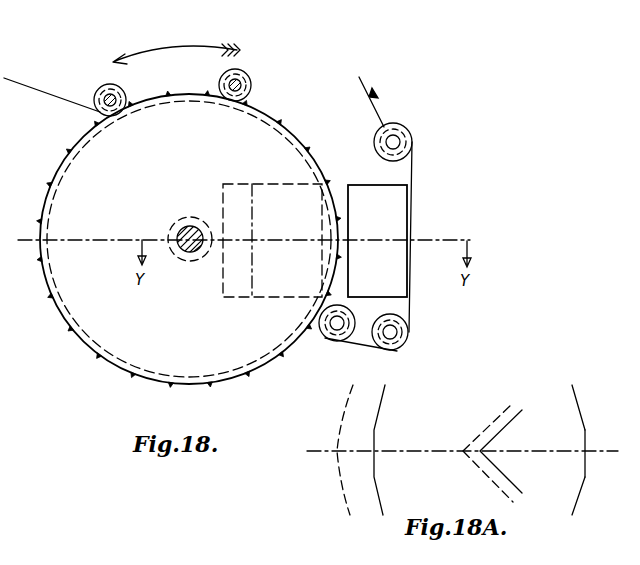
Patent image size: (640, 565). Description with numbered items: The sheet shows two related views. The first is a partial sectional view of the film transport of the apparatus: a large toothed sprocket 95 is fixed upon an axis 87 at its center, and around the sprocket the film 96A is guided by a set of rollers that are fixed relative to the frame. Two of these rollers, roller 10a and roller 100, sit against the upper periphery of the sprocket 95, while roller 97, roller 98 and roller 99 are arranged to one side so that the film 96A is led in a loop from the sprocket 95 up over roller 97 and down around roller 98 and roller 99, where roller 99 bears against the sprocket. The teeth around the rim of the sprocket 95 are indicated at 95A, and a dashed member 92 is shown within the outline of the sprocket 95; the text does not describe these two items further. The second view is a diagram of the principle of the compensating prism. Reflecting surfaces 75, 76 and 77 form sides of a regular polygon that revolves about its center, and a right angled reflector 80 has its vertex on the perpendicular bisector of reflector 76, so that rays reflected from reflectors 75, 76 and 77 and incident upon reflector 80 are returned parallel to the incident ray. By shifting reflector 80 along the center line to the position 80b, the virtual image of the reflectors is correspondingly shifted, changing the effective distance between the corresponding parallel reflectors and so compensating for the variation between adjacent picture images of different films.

In FIG. 18, the sprocket 95 is at (74, 335).
In FIG. 18, the drum teeth 95A is at (105, 361).
In FIG. 18, the axis 87 is at (190, 226).
In FIG. 18, the dashed member 92 is at (257, 292).
In FIG. 18, the roller 10a is at (121, 96).
In FIG. 18, the roller 100 is at (248, 83).
In FIG. 18, the roller 97 is at (410, 140).
In FIG. 18, the film 96A is at (410, 290).
In FIG. 18, the roller 99 is at (334, 341).
In FIG. 18, the roller 98 is at (398, 346).
In FIG. 18A, the right angled reflector 80 is at (506, 414).
In FIG. 18A, the shifted position of reflector 80b is at (463, 450).
In FIG. 18A, the reflecting surface 77 is at (580, 405).
In FIG. 18A, the reflecting surface 76 is at (585, 462).
In FIG. 18A, the reflecting surface 75 is at (578, 506).